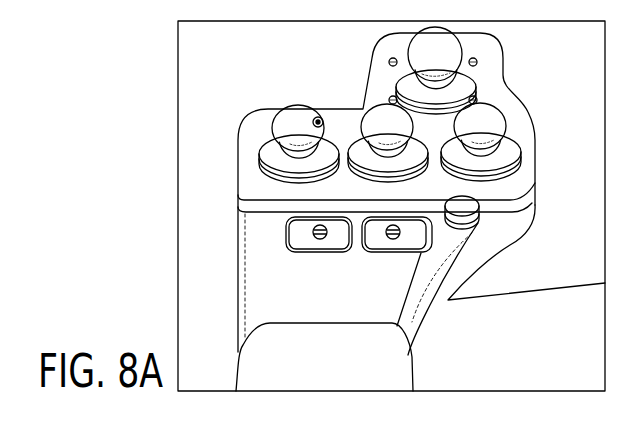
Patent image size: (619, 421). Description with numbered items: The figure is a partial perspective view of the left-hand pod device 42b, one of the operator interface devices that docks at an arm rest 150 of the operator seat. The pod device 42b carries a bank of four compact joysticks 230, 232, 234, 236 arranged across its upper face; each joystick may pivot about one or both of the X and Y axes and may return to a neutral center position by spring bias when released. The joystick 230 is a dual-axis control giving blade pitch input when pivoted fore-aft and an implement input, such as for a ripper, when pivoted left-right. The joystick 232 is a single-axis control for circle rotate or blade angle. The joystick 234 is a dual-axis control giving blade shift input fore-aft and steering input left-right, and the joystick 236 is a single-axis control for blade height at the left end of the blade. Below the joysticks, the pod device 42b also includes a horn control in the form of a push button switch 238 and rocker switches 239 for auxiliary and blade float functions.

The left-hand pod device 42b is at (238, 132).
The joystick 230 is at (437, 45).
The joystick 232 is at (487, 120).
The joystick 234 is at (383, 120).
The joystick 236 is at (295, 120).
The push button switch 238 is at (476, 206).
The rocker switches 239 is at (382, 237).
The arm rest 150 is at (260, 362).